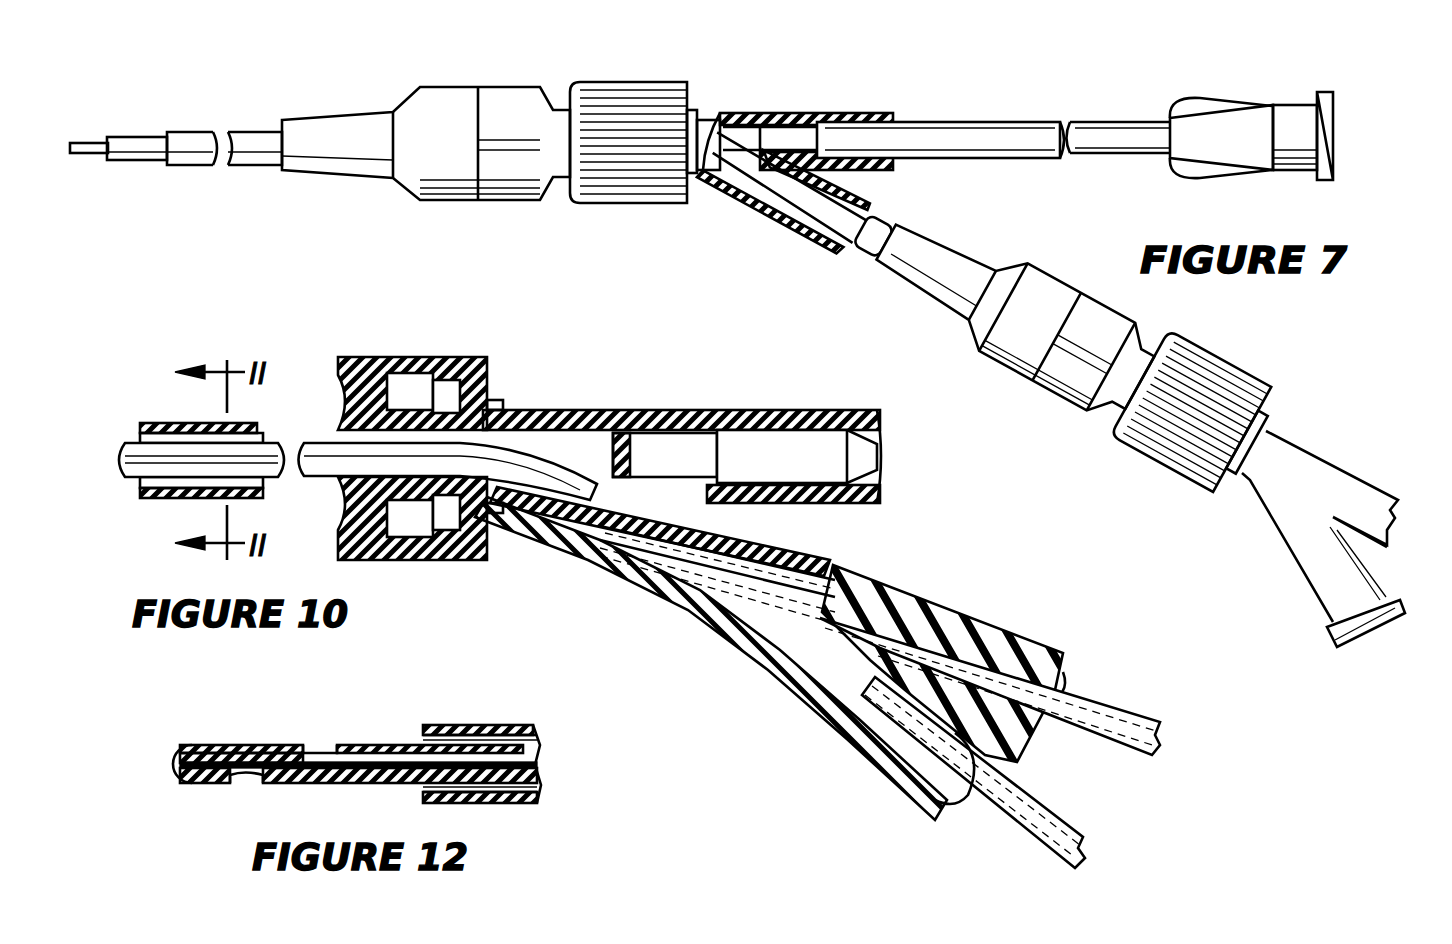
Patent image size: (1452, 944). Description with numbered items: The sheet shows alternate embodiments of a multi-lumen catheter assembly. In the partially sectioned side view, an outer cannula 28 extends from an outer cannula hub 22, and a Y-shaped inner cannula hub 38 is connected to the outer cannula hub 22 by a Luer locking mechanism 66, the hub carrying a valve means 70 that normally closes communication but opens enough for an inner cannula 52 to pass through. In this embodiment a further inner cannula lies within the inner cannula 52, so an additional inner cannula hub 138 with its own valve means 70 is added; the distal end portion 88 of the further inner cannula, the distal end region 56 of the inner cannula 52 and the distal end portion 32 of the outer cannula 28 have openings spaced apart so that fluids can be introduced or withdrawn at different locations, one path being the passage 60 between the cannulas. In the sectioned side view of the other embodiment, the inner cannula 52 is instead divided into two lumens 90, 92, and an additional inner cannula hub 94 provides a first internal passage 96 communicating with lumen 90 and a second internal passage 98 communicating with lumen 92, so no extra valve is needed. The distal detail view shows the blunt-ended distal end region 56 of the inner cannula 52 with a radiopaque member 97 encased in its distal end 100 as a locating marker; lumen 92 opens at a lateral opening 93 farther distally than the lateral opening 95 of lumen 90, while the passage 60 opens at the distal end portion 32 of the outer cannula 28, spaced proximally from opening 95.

In FIG. 7, the outer cannula hub 22 is at (462, 206).
In FIG. 10, the outer cannula 28 is at (263, 413).
In FIG. 12, the outer cannula 28 is at (508, 720).
In FIG. 7, the distal end portion of the outer cannula 32 is at (200, 160).
In FIG. 10, the distal end portion of the outer cannula 32 is at (163, 500).
In FIG. 12, the distal end portion of the outer cannula 32 is at (455, 722).
In FIG. 7, the inner cannula hub 38 is at (793, 102).
In FIG. 10, the inner cannula hub 38 is at (590, 396).
In FIG. 7, the inner cannula 52 is at (900, 224).
In FIG. 10, the inner cannula 52 is at (127, 438).
In FIG. 12, the inner cannula 52 is at (390, 742).
In FIG. 7, the distal end region of the inner cannula 56 is at (140, 136).
In FIG. 12, the distal end region of the inner cannula 56 is at (187, 752).
In FIG. 12, the passage 60 is at (430, 738).
In FIG. 7, the Luer locking mechanism 66 is at (650, 207).
In FIG. 7, the valve means 70 is at (1068, 274).
In FIG. 7, the distal end portion of the further inner cannula 88 is at (92, 140).
In FIG. 10, the lumen 90 is at (758, 568).
In FIG. 12, the lumen 90 is at (360, 760).
In FIG. 10, the lumen 92 is at (718, 618).
In FIG. 12, the lumen 92 is at (352, 773).
In FIG. 12, the lateral opening 93 is at (232, 778).
In FIG. 10, the additional inner cannula hub 94 is at (932, 580).
In FIG. 12, the lateral opening 95 is at (318, 752).
In FIG. 10, the first internal passage 96 is at (1068, 697).
In FIG. 12, the radiopaque member 97 is at (245, 760).
In FIG. 10, the second internal passage 98 is at (968, 745).
In FIG. 12, the distal end of the inner cannula 100 is at (174, 766).
In FIG. 7, the additional inner cannula hub 138 is at (1343, 470).